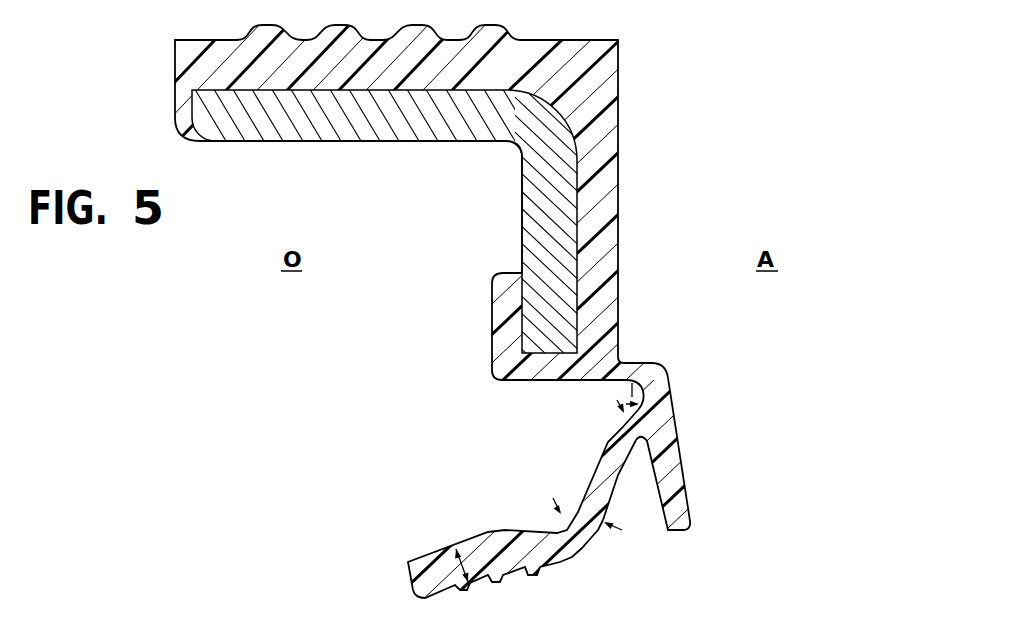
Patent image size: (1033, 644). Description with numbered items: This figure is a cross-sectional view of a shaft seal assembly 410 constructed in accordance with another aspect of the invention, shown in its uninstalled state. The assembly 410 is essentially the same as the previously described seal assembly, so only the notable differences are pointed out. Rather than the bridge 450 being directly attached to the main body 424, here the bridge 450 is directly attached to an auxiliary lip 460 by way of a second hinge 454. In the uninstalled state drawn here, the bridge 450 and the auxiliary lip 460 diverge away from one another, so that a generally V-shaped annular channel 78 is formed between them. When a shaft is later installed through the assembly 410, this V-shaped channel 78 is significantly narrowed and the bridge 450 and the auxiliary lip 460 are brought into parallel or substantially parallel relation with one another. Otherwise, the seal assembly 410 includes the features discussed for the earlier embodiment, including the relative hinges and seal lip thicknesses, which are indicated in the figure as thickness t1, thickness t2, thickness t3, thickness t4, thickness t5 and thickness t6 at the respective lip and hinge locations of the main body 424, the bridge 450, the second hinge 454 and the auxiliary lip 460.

The shaft seal assembly 410 is at (718, 220).
The main body 424 is at (542, 362).
The bridge 450 is at (603, 482).
The second hinge 454 is at (640, 422).
The auxiliary lip 460 is at (707, 453).
The V-shaped annular channel 78 is at (632, 502).
The seal lip thickness t1 is at (457, 548).
The seal lip thickness t2 is at (574, 509).
The seal lip thickness t3 is at (586, 553).
The seal lip thickness t4 is at (637, 438).
The seal lip thickness t5 is at (676, 397).
The seal lip thickness t6 is at (632, 381).